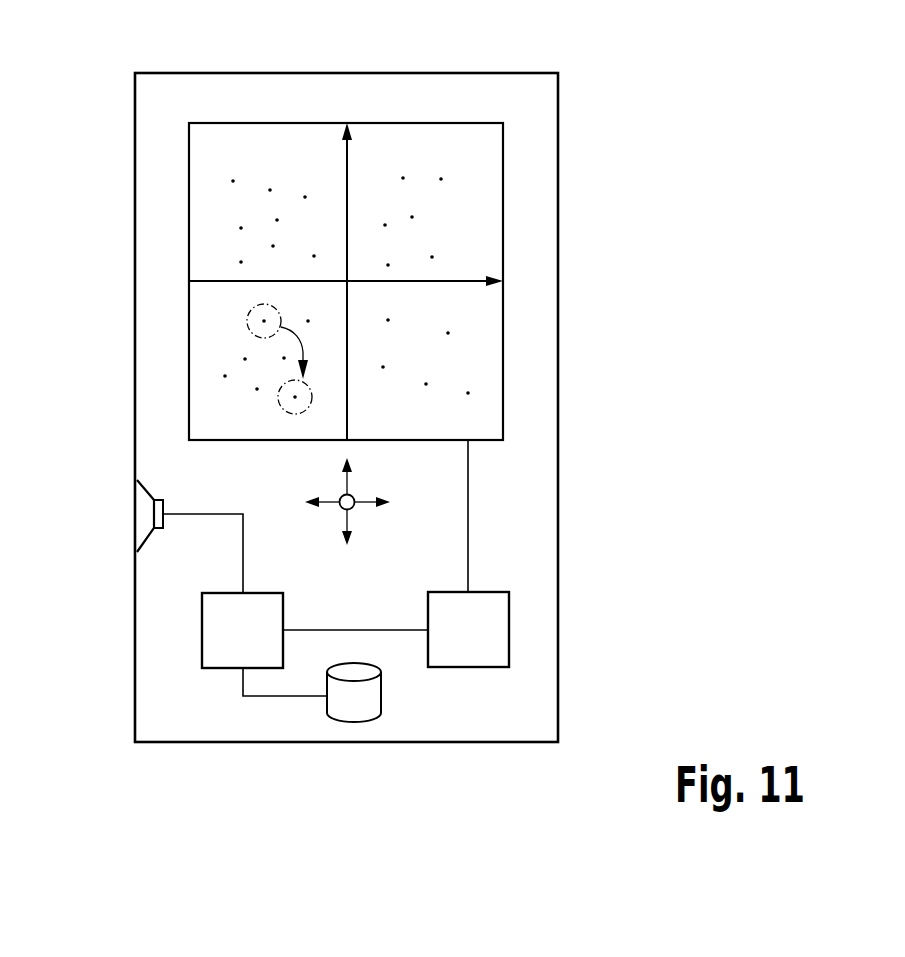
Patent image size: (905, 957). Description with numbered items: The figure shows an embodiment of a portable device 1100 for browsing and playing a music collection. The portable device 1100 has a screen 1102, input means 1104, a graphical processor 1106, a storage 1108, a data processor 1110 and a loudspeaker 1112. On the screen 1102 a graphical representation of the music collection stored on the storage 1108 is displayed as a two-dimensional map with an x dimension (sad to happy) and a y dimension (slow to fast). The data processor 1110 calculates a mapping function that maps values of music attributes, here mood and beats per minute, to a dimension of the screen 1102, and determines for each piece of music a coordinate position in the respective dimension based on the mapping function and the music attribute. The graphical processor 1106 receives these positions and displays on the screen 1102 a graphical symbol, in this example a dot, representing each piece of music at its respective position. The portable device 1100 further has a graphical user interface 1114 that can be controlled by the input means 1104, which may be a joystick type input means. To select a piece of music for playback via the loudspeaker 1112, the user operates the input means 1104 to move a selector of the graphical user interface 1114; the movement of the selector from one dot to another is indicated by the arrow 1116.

The portable device 1100 is at (558, 165).
The screen 1102 is at (399, 122).
The input means 1104 is at (338, 496).
The graphical processor 1106 is at (509, 618).
The storage 1108 is at (358, 728).
The data processor 1110 is at (202, 636).
The loudspeaker 1112 is at (145, 518).
The graphical user interface 1114 is at (248, 325).
The arrow 1116 is at (298, 347).